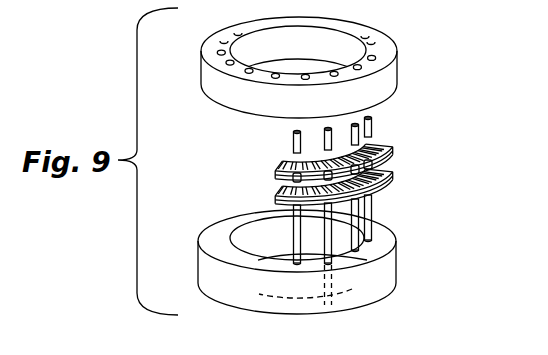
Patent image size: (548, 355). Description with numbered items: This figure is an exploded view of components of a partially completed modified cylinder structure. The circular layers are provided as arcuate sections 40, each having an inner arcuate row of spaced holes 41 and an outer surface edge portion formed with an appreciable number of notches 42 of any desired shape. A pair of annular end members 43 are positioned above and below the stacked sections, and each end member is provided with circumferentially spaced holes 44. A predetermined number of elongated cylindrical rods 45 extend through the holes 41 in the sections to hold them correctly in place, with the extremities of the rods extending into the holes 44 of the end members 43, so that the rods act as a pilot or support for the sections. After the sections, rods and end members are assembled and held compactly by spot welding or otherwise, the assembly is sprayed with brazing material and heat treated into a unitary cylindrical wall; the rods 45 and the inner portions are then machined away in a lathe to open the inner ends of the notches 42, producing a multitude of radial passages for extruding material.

The arcuate sections 40 is at (388, 130).
The spaced holes 41 is at (325, 152).
The notches 42 is at (284, 172).
The annular end members 43 is at (210, 80).
The circumferentially spaced holes 44 is at (360, 64).
The elongated cylindrical rods 45 is at (355, 225).